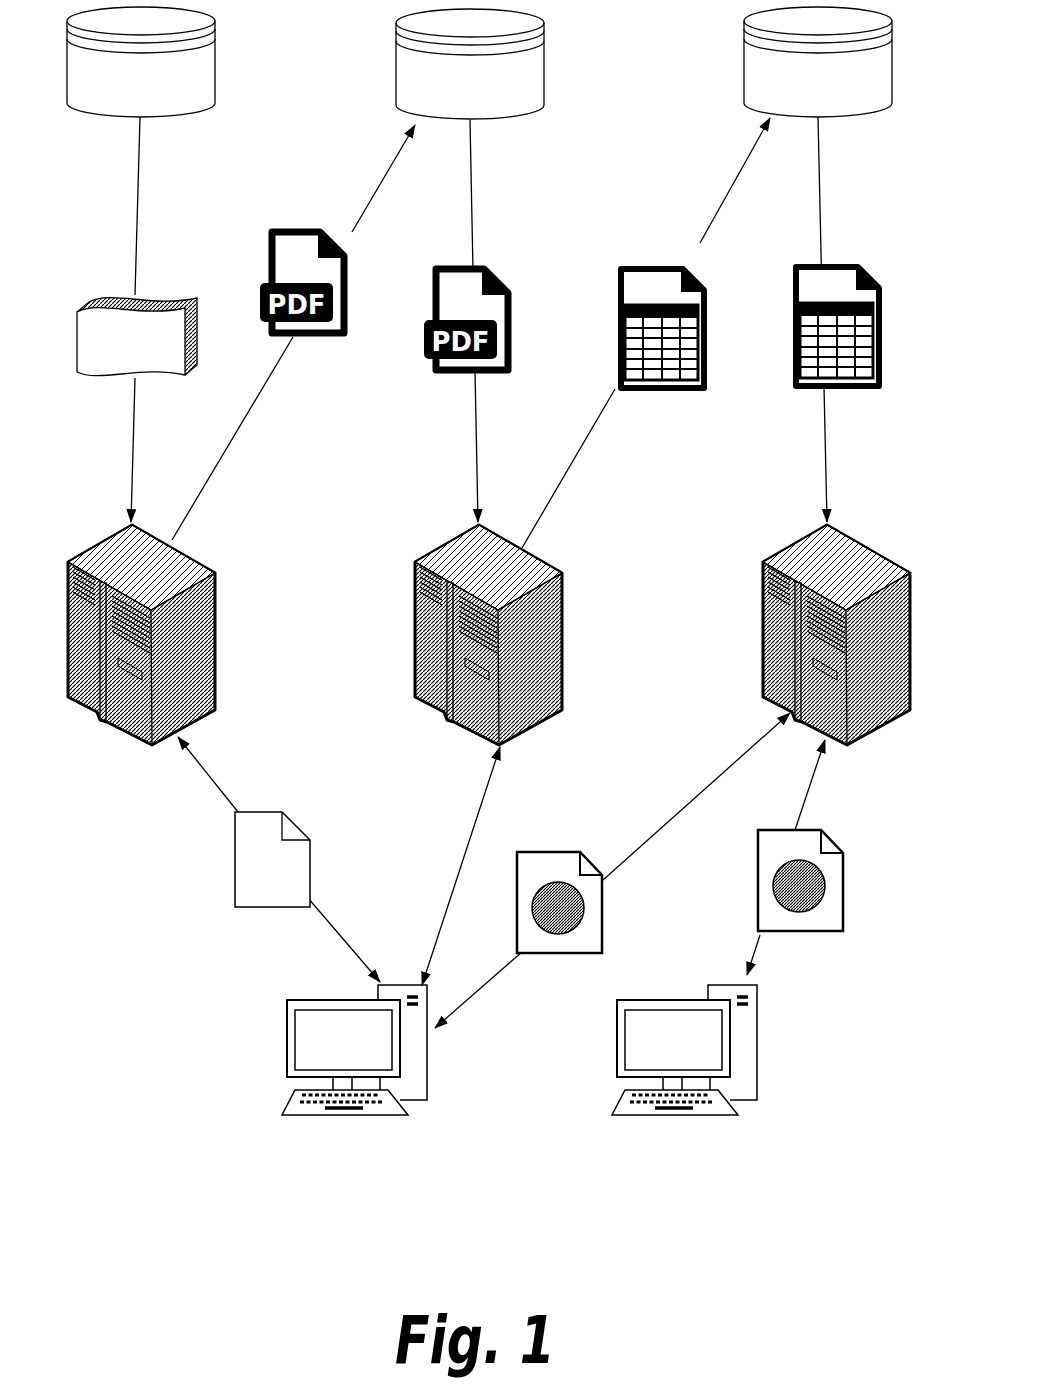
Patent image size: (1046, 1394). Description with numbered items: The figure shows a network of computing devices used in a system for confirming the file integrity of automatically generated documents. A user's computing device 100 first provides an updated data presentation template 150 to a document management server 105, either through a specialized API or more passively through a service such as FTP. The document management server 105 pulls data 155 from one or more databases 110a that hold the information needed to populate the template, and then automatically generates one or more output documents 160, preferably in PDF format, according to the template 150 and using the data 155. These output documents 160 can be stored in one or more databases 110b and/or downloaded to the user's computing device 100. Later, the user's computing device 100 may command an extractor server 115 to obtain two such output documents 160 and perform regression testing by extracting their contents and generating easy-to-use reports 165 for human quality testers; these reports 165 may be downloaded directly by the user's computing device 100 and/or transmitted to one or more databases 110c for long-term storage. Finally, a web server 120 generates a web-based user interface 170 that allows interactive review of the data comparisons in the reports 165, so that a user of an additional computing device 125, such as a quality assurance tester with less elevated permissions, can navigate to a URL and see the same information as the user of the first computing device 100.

The user's computing device 100 is at (315, 1115).
The document management server 105 is at (190, 557).
The database 110a is at (141, 62).
The database 110b is at (470, 64).
The database 110c is at (818, 62).
The extractor server 115 is at (417, 650).
The web server 120 is at (763, 633).
The additional computing device 125 is at (643, 1118).
The data presentation template 150 is at (238, 912).
The data 155 is at (137, 337).
The output document 160 is at (307, 228).
The report 165 is at (658, 265).
The web-based user interface 170 is at (570, 852).